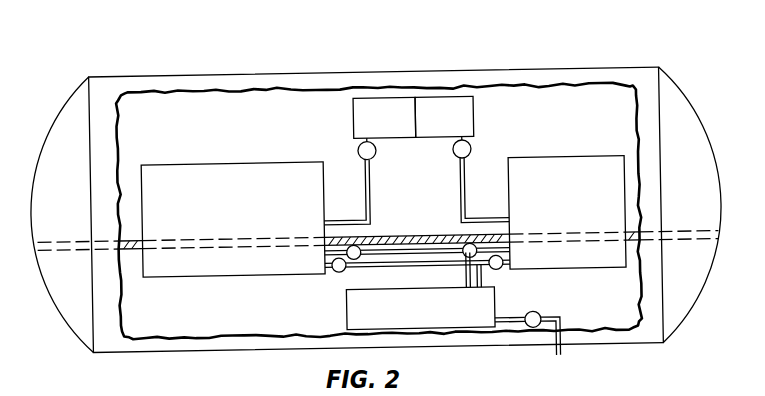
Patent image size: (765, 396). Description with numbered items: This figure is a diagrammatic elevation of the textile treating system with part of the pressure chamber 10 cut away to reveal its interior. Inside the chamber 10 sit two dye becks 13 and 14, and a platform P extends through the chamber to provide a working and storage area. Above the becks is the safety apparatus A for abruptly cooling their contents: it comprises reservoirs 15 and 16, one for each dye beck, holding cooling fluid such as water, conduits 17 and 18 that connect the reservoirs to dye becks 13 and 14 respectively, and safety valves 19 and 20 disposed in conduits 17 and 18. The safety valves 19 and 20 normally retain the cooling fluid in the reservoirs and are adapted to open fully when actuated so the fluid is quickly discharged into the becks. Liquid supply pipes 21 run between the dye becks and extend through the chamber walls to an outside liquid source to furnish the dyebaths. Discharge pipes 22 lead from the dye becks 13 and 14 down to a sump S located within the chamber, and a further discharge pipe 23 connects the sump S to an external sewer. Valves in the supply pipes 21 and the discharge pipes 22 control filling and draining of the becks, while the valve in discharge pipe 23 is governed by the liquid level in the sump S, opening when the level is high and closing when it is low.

The pressure chamber 10 is at (367, 72).
The dye beck 13 is at (232, 163).
The dye beck 14 is at (581, 160).
The reservoir 15 is at (364, 118).
The reservoir 16 is at (467, 115).
The conduit 17 is at (366, 191).
The conduit 18 is at (471, 187).
The safety valve 19 is at (359, 151).
The safety valve 20 is at (472, 150).
The liquid supply pipes 21 is at (405, 256).
The discharge pipes 22 is at (465, 272).
The discharge pipe 23 is at (549, 320).
The safety apparatus A is at (414, 135).
The platform P is at (418, 236).
The sump S is at (349, 311).